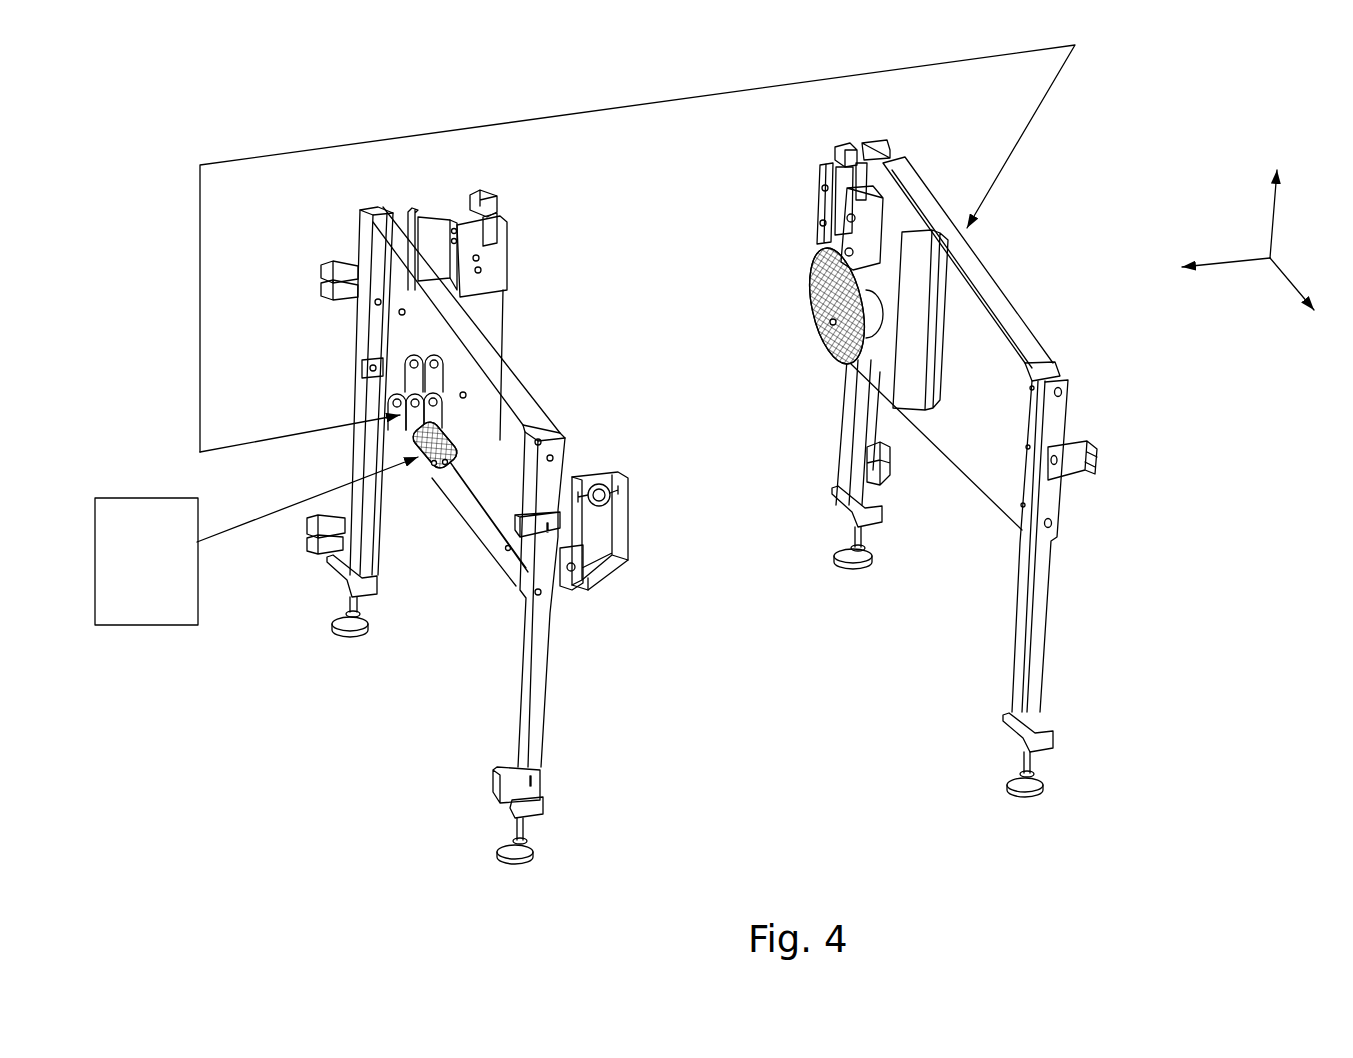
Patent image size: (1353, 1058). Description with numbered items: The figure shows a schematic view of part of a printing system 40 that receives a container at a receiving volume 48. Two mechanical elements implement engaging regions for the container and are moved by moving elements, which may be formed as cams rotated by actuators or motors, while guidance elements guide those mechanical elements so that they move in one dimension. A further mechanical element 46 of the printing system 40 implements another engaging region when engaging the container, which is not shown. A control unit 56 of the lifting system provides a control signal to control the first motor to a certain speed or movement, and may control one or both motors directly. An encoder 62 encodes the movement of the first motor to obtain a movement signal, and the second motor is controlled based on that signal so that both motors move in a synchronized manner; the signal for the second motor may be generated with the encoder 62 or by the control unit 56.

The printing system 40 is at (1345, 78).
The mechanical element 46 is at (602, 476).
The receiving volume 48 is at (780, 595).
The control unit 56 is at (143, 497).
The encoder 62 is at (397, 392).